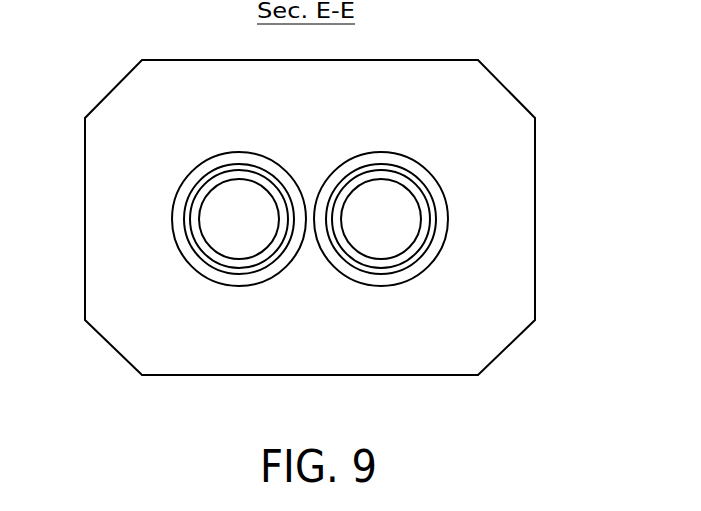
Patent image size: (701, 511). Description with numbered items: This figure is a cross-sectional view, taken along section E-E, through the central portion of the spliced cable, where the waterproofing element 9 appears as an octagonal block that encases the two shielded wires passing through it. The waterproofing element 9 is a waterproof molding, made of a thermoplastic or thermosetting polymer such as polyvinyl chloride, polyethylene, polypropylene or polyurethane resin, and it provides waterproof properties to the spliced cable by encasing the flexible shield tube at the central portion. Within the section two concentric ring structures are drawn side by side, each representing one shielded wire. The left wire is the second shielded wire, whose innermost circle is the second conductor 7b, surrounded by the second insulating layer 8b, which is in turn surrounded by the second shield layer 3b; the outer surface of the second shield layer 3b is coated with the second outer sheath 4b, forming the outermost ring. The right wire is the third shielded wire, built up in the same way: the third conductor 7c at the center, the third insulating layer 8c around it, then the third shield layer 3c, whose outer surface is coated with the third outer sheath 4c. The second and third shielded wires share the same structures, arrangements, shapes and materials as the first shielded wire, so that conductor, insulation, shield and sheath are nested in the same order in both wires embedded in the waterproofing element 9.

The waterproofing element 9 is at (370, 107).
The second conductor 7b is at (232, 210).
The third conductor 7c is at (385, 210).
The second insulating layer 8b is at (185, 220).
The third insulating layer 8c is at (432, 222).
The second shield layer 3b is at (185, 240).
The third shield layer 3c is at (440, 240).
The second outer sheath 4b is at (227, 277).
The third outer sheath 4c is at (396, 274).